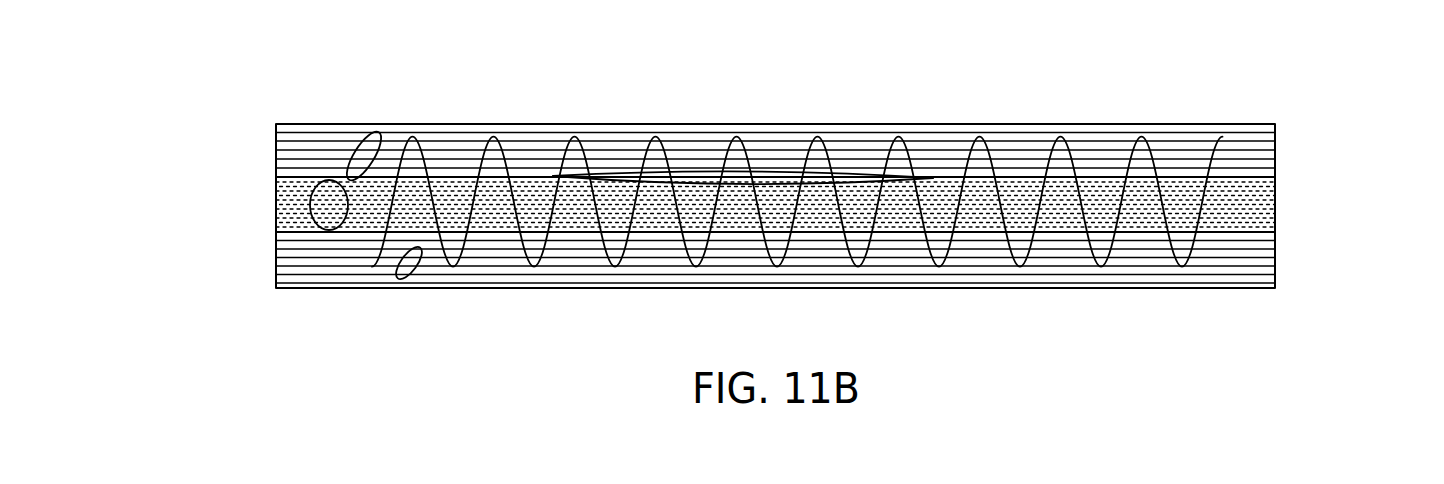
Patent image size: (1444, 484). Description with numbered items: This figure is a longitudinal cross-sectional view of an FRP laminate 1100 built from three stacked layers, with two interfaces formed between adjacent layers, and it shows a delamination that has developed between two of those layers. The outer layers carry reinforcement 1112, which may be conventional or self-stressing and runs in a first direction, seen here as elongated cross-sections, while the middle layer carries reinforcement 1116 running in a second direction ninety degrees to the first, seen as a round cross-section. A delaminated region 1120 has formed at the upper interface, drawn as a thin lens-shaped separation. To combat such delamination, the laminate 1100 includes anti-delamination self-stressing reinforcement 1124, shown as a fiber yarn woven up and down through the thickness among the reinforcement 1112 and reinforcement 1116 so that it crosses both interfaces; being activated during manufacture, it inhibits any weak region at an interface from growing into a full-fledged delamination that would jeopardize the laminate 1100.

The FRP laminate 1100 is at (1216, 112).
The reinforcement 1112 is at (376, 127).
The reinforcement 1116 is at (330, 230).
The delaminated region 1120 is at (770, 174).
The anti-delamination self-stressing reinforcement 1124 is at (556, 174).